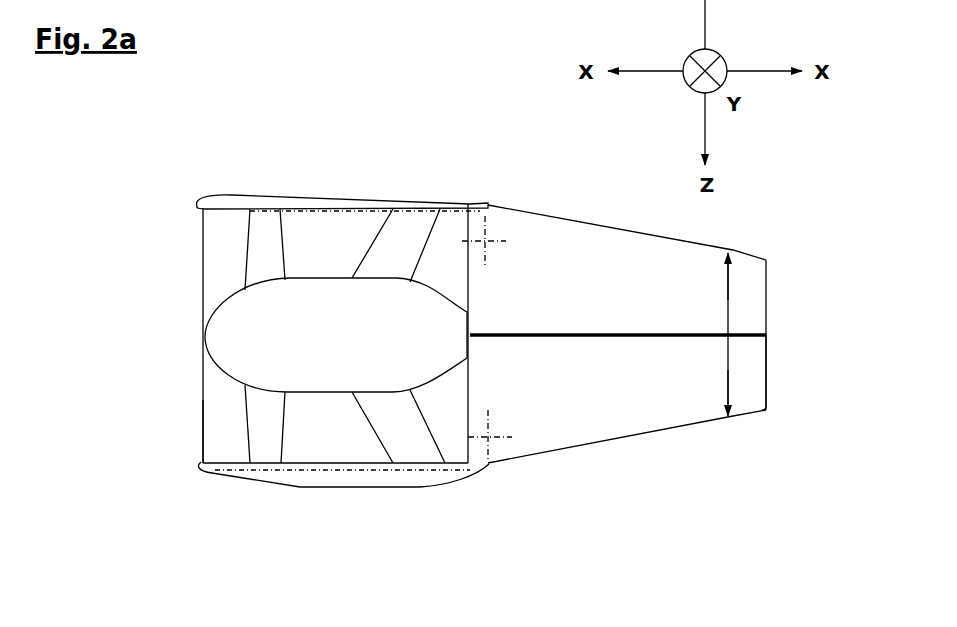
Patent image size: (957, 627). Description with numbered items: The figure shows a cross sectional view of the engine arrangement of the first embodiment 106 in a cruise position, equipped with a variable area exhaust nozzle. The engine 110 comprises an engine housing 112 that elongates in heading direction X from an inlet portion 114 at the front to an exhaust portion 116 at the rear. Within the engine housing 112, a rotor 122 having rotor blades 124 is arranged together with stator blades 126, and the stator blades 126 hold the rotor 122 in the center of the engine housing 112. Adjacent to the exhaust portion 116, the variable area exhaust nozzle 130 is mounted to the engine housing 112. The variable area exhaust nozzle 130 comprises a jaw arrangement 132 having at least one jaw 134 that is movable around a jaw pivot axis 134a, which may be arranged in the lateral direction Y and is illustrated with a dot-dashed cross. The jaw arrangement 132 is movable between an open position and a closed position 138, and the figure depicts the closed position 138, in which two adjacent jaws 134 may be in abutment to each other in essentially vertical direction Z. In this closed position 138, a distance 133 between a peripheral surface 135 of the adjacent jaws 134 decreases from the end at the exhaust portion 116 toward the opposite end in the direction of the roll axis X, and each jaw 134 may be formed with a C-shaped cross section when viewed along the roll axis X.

The engine arrangement of the first embodiment 106 is at (147, 185).
The engine 110 is at (163, 327).
The engine housing 112 is at (283, 487).
The inlet portion 114 is at (198, 408).
The exhaust portion 116 is at (472, 358).
The rotor 122 is at (282, 322).
The rotor blades 124 is at (258, 245).
The stator blades 126 is at (420, 230).
The variable area exhaust nozzle 130 is at (626, 213).
The jaw arrangement 132 is at (544, 200).
The distance 133 is at (699, 335).
The jaw 134 is at (768, 282).
The jaw pivot axis 134a is at (486, 243).
The peripheral surface 135 is at (741, 245).
The closed position 138 is at (782, 385).